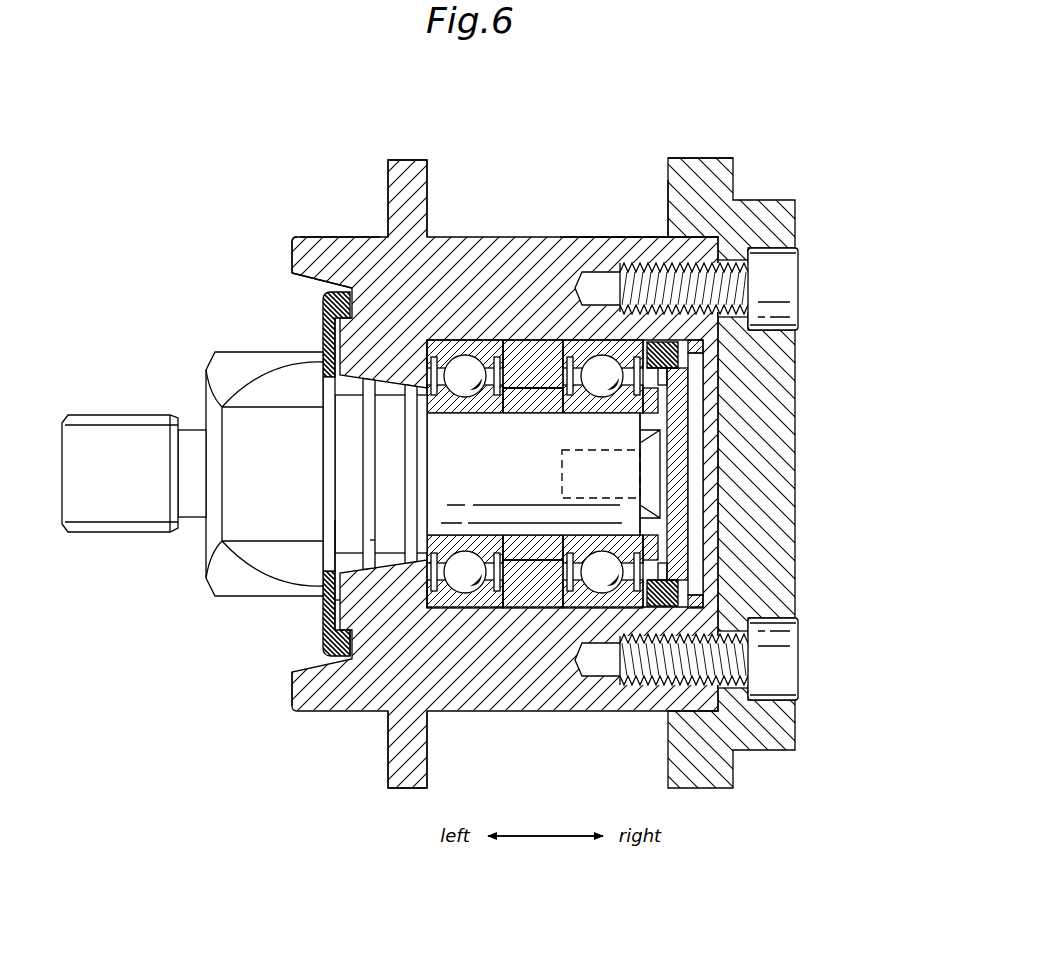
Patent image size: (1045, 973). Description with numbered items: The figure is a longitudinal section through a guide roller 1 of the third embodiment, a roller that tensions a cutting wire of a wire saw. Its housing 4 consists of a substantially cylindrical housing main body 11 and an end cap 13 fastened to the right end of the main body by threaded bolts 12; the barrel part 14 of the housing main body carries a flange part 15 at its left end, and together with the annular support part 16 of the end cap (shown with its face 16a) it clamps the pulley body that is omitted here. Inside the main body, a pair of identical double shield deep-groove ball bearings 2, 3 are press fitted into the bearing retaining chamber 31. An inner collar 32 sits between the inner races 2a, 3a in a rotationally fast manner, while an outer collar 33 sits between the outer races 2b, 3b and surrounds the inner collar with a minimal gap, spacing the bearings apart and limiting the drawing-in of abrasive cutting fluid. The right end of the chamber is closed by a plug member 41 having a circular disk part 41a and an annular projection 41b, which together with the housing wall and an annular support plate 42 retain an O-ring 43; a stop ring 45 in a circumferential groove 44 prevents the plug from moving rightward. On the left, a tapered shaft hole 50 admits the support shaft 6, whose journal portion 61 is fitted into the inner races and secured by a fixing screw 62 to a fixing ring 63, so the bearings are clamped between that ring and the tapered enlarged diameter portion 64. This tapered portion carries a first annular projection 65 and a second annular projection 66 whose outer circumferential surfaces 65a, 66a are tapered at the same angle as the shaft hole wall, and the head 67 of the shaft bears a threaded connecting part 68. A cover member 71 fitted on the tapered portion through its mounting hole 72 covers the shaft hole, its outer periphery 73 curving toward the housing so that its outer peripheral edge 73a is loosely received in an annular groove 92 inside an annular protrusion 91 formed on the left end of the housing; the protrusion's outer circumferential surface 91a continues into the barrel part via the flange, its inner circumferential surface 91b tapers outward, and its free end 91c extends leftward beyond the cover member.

The guide roller 1 is at (690, 88).
The bearing 2 is at (474, 481).
The inner race of bearing 2 2a is at (446, 600).
The outer race of bearing 2 2b is at (486, 606).
The bearing 3 is at (602, 463).
The inner race of bearing 3 3a is at (658, 572).
The outer race of bearing 3 3b is at (610, 604).
The housing 4 is at (582, 128).
The support shaft 6 is at (197, 368).
The housing main body 11 is at (614, 232).
The threaded bolt 12 is at (799, 275).
The end cap 13 is at (690, 147).
The barrel part 14 is at (540, 237).
The flange part 15 is at (424, 160).
The annular support part 16 is at (717, 162).
The bracket mounting face 16a is at (664, 200).
The bearing retaining chamber 31 is at (530, 604).
The inner collar 32 is at (560, 604).
The outer collar 33 is at (520, 612).
The plug member 41 is at (756, 474).
The circular disk part 41a is at (684, 415).
The annular projection 41b is at (666, 380).
The annular support plate 42 is at (655, 372).
The O-ring 43 is at (658, 340).
The circumferential groove 44 is at (720, 262).
The stop ring 45 is at (706, 348).
The shaft hole 50 is at (330, 605).
The journal portion 61 is at (520, 481).
The fixing screw 62 is at (656, 485).
The fixing ring 63 is at (656, 535).
The tapered enlarged diameter portion 64 is at (288, 571).
The first annular projection 65 is at (323, 400).
The outer circumferential surface 65a is at (357, 575).
The second annular projection 66 is at (365, 525).
The outer circumferential surface 66a is at (373, 568).
The head 67 is at (134, 432).
The threaded connecting part 68 is at (123, 430).
The cover member 71 is at (316, 318).
The mounting hole 72 is at (330, 378).
The outer periphery 73 is at (350, 656).
The outer peripheral edge 73a is at (333, 665).
The annular protrusion 91 is at (290, 236).
The outer circumferential surface 91a is at (333, 237).
The inner circumferential surface 91b is at (312, 290).
The free end 91c is at (292, 250).
The annular groove 92 is at (322, 634).